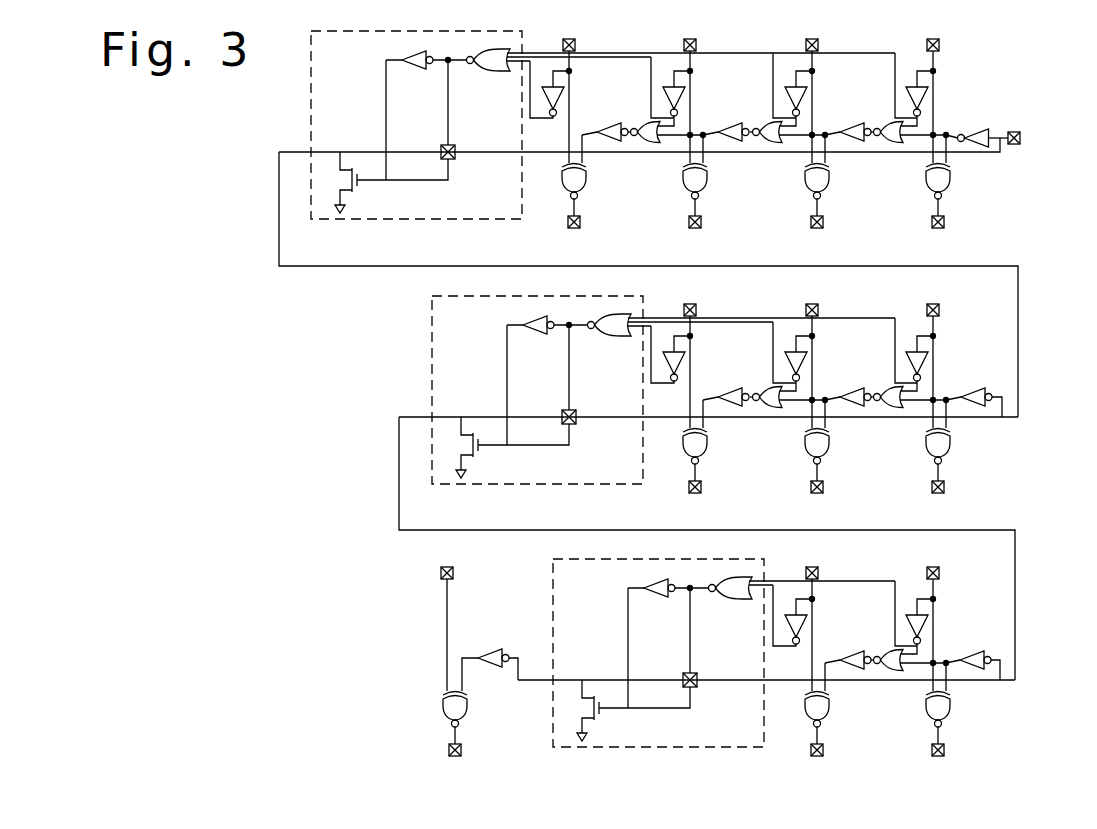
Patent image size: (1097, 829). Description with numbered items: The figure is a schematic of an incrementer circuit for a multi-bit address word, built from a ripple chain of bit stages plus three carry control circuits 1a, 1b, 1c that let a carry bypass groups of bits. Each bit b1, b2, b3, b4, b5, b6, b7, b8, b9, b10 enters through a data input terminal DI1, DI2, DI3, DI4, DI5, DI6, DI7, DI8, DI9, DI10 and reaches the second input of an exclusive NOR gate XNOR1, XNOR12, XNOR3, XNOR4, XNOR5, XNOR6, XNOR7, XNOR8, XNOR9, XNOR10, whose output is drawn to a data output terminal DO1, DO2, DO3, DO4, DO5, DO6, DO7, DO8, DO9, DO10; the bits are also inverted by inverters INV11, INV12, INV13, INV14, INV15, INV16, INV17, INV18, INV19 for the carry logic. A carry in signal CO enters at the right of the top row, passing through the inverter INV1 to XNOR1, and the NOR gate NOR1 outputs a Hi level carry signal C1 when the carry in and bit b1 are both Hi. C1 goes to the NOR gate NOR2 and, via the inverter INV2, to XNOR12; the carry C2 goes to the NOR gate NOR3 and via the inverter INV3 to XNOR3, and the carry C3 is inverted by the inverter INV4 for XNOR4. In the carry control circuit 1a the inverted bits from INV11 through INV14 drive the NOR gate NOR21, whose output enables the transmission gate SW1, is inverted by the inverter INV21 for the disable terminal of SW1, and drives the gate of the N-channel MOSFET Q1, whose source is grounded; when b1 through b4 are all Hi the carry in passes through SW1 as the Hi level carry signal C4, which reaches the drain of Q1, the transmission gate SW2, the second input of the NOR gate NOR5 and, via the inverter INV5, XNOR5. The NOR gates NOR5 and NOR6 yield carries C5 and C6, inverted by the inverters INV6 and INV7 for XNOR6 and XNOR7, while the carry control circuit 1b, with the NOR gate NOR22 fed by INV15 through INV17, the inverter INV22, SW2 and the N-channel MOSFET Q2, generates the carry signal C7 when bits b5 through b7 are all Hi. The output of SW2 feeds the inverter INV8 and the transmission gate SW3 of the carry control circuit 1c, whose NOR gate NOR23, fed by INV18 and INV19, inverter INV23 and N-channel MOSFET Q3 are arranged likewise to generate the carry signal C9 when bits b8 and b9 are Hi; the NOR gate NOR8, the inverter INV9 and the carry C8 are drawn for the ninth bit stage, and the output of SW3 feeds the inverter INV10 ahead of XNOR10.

The carry control circuit 1a is at (447, 32).
The carry control circuit 1b is at (565, 297).
The carry control circuit 1c is at (675, 560).
The inverter INV1 is at (985, 129).
The inverter INV2 is at (858, 123).
The inverter INV3 is at (735, 124).
The inverter INV4 is at (614, 124).
The inverter INV5 is at (983, 388).
The inverter INV6 is at (858, 388).
The inverter INV7 is at (735, 389).
The inverter INV8 is at (978, 651).
The inverter INV9 is at (855, 651).
The inverter INV10 is at (490, 648).
The inverter INV11 is at (906, 90).
The inverter INV12 is at (784, 90).
The inverter INV13 is at (662, 90).
The inverter INV14 is at (540, 98).
The inverter INV15 is at (906, 355).
The inverter INV16 is at (784, 355).
The inverter INV17 is at (661, 363).
The inverter INV18 is at (906, 618).
The inverter INV19 is at (782, 626).
The inverter INV21 is at (413, 70).
The inverter INV22 is at (527, 337).
The inverter INV23 is at (650, 598).
The NOR gate NOR1 is at (893, 143).
The NOR gate NOR2 is at (772, 143).
The NOR gate NOR3 is at (650, 143).
The NOR gate NOR5 is at (893, 408).
The NOR gate NOR6 is at (772, 408).
The NOR gate NOR8 is at (893, 671).
The NOR gate NOR21 is at (498, 72).
The NOR gate NOR22 is at (619, 337).
The NOR gate NOR23 is at (735, 600).
The exclusive NOR gate XNOR1 is at (950, 180).
The exclusive NOR gate XNOR12 is at (829, 180).
The exclusive NOR gate XNOR3 is at (707, 180).
The exclusive NOR gate XNOR4 is at (586, 180).
The exclusive NOR gate XNOR5 is at (950, 445).
The exclusive NOR gate XNOR6 is at (829, 445).
The exclusive NOR gate XNOR7 is at (707, 445).
The exclusive NOR gate XNOR8 is at (950, 708).
The exclusive NOR gate XNOR9 is at (829, 708).
The exclusive NOR gate XNOR10 is at (443, 710).
The N-channel MOSFET Q1 is at (357, 186).
The N-channel MOSFET Q2 is at (478, 451).
The N-channel MOSFET Q3 is at (599, 714).
The transmission gate SW1 is at (455, 157).
The transmission gate SW2 is at (576, 422).
The transmission gate SW3 is at (697, 685).
The bit b1 is at (926, 90).
The bit b2 is at (805, 91).
The bit b3 is at (683, 91).
The bit b4 is at (562, 91).
The bit b5 is at (926, 356).
The bit b6 is at (805, 356).
The bit b7 is at (683, 356).
The bit b8 is at (926, 619).
The bit b9 is at (805, 619).
The bit input line b10 is at (444, 617).
The data input terminal DI1 is at (938, 40).
The data input terminal DI2 is at (817, 40).
The data input terminal DI3 is at (695, 40).
The data input terminal DI4 is at (574, 40).
The data input terminal DI5 is at (938, 305).
The data input terminal DI6 is at (817, 305).
The data input terminal DI7 is at (695, 305).
The data input terminal DI8 is at (938, 568).
The data input terminal DI9 is at (817, 568).
The data input terminal DI10 is at (452, 568).
The data output terminal DO1 is at (940, 228).
The data output terminal DO2 is at (818, 228).
The data output terminal DO3 is at (697, 228).
The data output terminal DO4 is at (576, 228).
The data output terminal DO5 is at (940, 493).
The data output terminal DO6 is at (819, 493).
The data output terminal DO7 is at (697, 493).
The data output terminal DO8 is at (942, 756).
The data output terminal DO9 is at (818, 756).
The data output terminal DO10 is at (457, 756).
The carry signal C1 is at (871, 142).
The carry signal C2 is at (750, 142).
The carry signal C3 is at (628, 142).
The carry signal C4 is at (281, 149).
The carry signal C5 is at (873, 407).
The carry signal C6 is at (752, 407).
The carry signal C7 is at (410, 414).
The carry signal C8 is at (869, 670).
The carry signal C9 is at (535, 677).
The carry in signal CO is at (1014, 130).